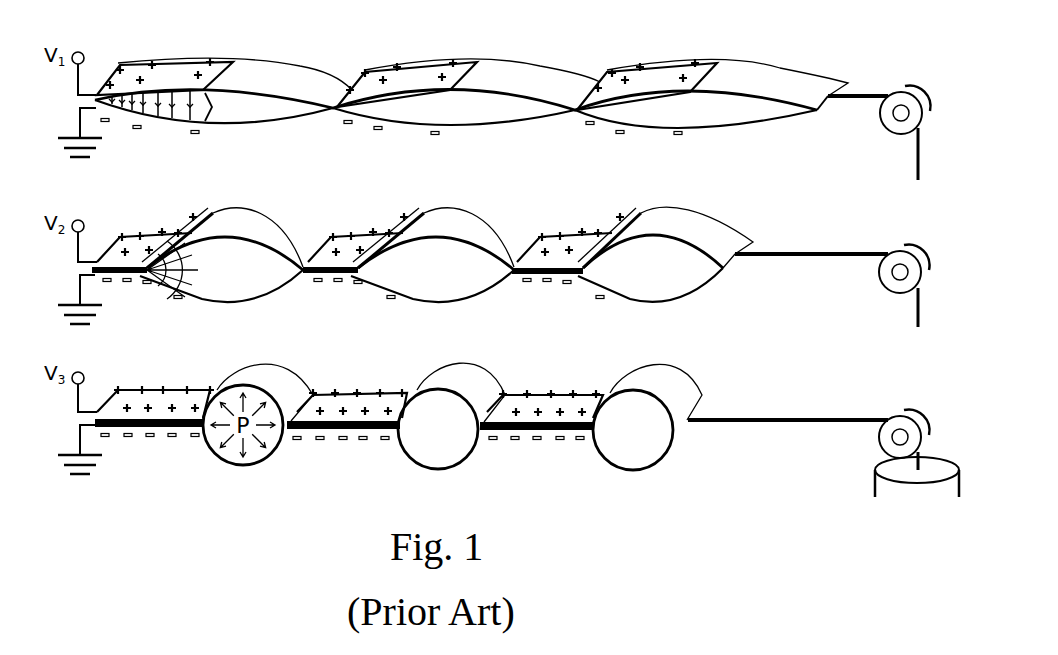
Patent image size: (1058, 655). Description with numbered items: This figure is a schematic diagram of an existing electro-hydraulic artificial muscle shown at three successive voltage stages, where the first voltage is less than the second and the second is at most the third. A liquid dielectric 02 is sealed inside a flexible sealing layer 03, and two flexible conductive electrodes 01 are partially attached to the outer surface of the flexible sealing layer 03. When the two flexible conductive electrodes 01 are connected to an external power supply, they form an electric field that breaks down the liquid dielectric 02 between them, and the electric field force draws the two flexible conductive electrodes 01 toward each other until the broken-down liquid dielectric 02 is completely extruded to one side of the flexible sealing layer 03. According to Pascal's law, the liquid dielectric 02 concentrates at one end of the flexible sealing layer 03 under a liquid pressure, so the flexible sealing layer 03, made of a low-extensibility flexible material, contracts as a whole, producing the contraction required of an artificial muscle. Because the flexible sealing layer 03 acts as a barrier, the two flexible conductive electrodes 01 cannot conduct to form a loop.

The flexible conductive electrode 01 is at (374, 70).
The liquid dielectric 02 is at (473, 103).
The flexible sealing layer 03 is at (553, 79).